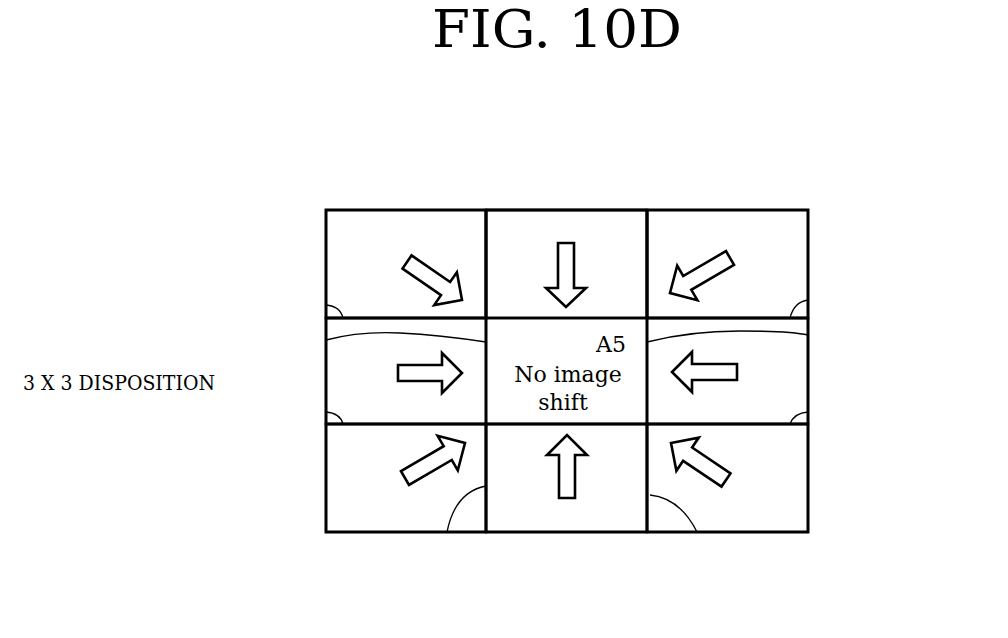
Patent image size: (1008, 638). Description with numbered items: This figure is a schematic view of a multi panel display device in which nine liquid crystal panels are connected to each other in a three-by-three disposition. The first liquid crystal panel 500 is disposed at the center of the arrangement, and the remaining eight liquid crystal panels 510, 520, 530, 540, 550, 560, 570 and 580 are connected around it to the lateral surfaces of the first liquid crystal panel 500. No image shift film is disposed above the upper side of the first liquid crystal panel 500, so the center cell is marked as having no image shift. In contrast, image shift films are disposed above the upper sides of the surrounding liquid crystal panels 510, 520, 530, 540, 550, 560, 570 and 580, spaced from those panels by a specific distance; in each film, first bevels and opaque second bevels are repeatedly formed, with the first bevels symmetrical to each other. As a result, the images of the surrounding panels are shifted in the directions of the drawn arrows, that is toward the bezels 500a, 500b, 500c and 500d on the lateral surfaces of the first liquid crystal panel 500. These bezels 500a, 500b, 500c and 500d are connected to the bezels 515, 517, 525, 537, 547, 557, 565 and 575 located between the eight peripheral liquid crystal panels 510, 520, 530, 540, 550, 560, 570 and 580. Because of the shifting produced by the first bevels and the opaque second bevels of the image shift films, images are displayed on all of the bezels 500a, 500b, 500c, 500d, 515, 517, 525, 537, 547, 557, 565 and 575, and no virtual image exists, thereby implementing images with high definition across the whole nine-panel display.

The first liquid crystal panel 500 is at (627, 410).
The bezel of the first liquid crystal panel 500a is at (532, 315).
The bezel of the first liquid crystal panel 500b is at (326, 340).
The bezel of the first liquid crystal panel 500c is at (808, 333).
The bezel of the first liquid crystal panel 500d is at (517, 425).
The liquid crystal panel 510 is at (326, 266).
The bezel 515 is at (486, 240).
The bezel 517 is at (326, 306).
The liquid crystal panel 520 is at (600, 222).
The bezel 525 is at (647, 240).
The liquid crystal panel 530 is at (808, 262).
The bezel 537 is at (808, 300).
The liquid crystal panel 540 is at (326, 373).
The bezel 547 is at (326, 420).
The liquid crystal panel 550 is at (808, 368).
The bezel 557 is at (808, 413).
The liquid crystal panel 560 is at (326, 481).
The bezel 565 is at (447, 532).
The liquid crystal panel 570 is at (595, 518).
The bezel 575 is at (697, 532).
The liquid crystal panel 580 is at (808, 476).